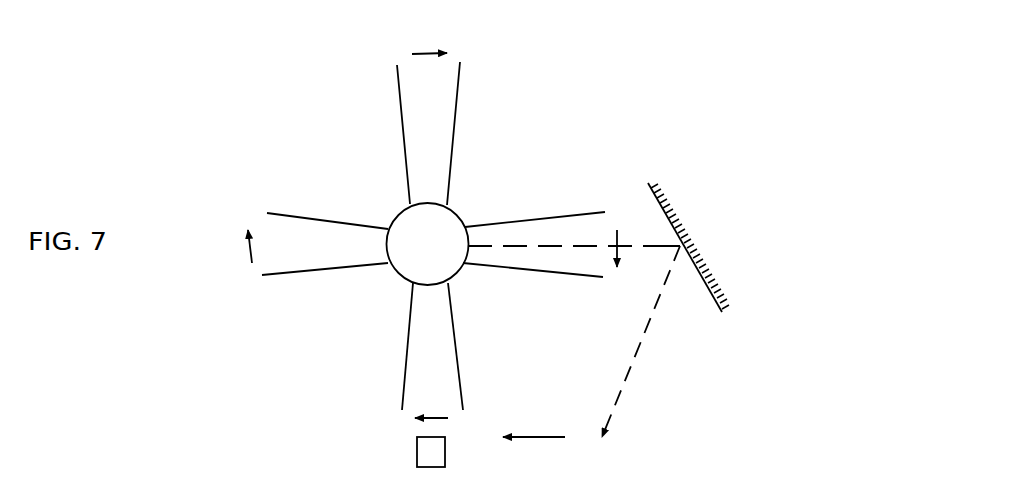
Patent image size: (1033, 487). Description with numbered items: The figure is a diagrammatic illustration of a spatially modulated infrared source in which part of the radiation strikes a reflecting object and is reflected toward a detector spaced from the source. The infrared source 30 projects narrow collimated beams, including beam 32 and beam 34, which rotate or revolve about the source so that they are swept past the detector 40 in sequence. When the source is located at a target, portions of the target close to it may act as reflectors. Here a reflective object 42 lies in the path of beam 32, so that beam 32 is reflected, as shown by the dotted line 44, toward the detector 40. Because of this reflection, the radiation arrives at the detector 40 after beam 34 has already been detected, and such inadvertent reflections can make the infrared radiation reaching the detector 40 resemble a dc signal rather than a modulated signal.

The infrared source 30 is at (455, 213).
The beam 32 is at (533, 217).
The beam 34 is at (453, 322).
The detector 40 is at (445, 452).
The reflective object 42 is at (648, 183).
The dotted line 44 is at (640, 347).